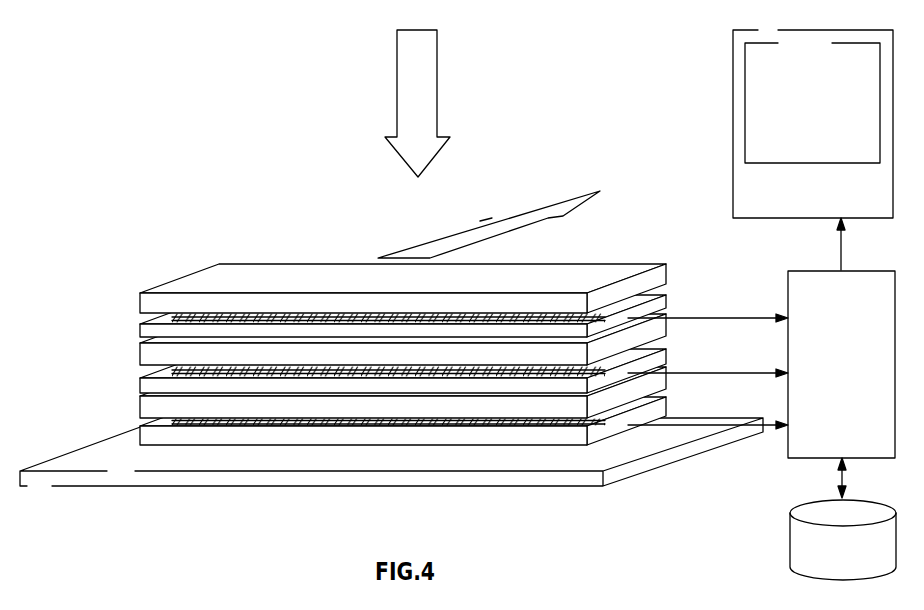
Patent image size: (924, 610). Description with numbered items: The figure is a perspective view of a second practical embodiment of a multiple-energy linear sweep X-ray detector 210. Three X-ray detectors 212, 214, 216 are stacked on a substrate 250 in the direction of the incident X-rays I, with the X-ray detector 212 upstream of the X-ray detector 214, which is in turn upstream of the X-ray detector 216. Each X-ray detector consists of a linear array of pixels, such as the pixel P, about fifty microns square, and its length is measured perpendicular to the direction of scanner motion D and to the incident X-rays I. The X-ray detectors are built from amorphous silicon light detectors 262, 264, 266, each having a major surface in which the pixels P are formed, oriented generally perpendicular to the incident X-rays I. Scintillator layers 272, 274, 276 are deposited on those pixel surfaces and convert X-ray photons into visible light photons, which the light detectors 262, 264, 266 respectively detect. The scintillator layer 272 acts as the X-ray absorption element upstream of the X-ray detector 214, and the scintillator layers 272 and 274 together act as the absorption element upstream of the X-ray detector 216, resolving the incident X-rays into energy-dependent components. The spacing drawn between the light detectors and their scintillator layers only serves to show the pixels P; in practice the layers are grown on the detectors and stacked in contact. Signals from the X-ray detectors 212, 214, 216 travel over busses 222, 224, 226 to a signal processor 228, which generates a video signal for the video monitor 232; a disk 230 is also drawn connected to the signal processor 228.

The multiple-energy linear sweep X-ray detector 210 is at (349, 307).
The X-ray detector 212 is at (349, 303).
The X-ray detector 214 is at (349, 355).
The X-ray detector 216 is at (349, 408).
The scintillator layer 272 is at (140, 302).
The amorphous silicon light detector 262 is at (140, 330).
The scintillator layer 274 is at (140, 355).
The amorphous silicon light detector 264 is at (140, 384).
The scintillator layer 276 is at (140, 407).
The amorphous silicon light detector 266 is at (140, 436).
The pixel P is at (222, 314).
The direction of scanner motion D is at (437, 236).
The incident X-rays I is at (438, 84).
The bus 222 is at (733, 317).
The bus 224 is at (740, 373).
The bus 226 is at (730, 425).
The signal processor 228 is at (788, 460).
The disk 230 is at (790, 540).
The video monitor 232 is at (733, 125).
The substrate 250 is at (488, 487).